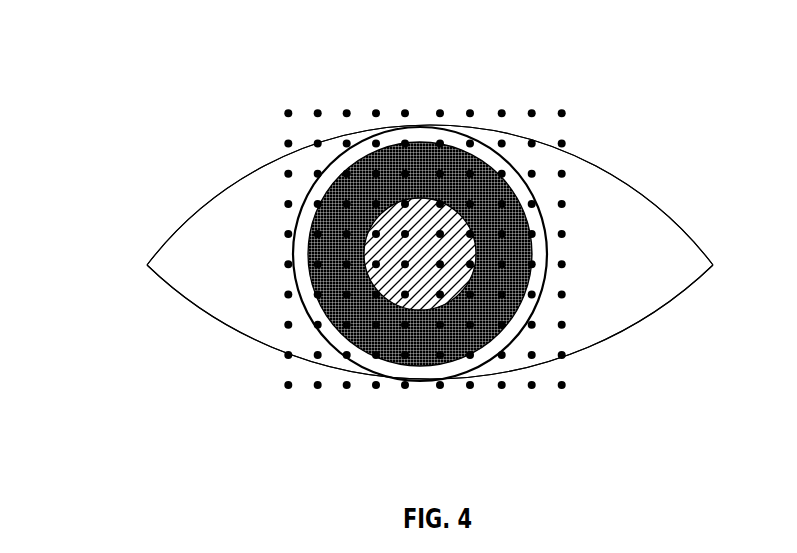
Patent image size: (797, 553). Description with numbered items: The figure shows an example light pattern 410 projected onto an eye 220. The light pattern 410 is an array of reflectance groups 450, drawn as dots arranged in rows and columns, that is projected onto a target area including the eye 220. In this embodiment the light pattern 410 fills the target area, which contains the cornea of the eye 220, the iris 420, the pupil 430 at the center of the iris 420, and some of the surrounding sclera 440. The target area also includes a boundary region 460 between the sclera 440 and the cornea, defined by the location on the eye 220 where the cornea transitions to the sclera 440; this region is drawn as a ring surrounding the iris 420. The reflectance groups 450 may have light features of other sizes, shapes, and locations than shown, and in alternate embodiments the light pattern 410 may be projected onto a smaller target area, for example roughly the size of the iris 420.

The eye 220 is at (155, 250).
The light pattern 410 is at (567, 120).
The iris 420 is at (545, 268).
The pupil 430 is at (378, 282).
The sclera 440 is at (675, 243).
The reflectance group 450 is at (563, 382).
The boundary region 460 is at (328, 173).